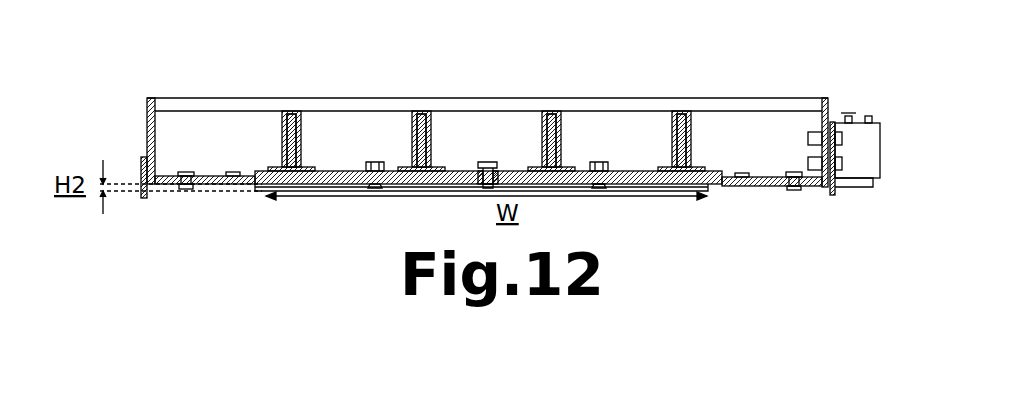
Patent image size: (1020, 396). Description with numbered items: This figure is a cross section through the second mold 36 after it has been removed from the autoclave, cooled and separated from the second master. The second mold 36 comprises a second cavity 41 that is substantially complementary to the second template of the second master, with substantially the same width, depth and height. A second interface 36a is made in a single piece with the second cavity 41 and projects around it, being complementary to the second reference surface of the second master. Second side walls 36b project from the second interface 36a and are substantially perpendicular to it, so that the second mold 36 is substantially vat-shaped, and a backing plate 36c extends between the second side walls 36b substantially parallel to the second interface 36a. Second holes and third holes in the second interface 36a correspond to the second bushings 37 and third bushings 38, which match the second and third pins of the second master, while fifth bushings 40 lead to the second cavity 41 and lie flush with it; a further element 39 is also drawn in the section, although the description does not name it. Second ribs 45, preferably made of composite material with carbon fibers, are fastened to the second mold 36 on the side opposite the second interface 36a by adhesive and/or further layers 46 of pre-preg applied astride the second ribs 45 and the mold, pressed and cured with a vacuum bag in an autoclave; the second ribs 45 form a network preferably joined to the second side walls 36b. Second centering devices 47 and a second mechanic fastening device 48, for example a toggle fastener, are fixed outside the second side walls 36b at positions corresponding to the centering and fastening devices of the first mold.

The second mold 36 is at (420, 178).
The second interface 36a is at (243, 185).
The second side walls 36b is at (147, 110).
The backing plate 36c is at (768, 98).
The second bushings 37 is at (184, 188).
The third bushings 38 is at (232, 178).
The positioning pin 39 is at (488, 186).
The fifth bushings 40 is at (375, 184).
The second cavity 41 is at (603, 188).
The second ribs 45 is at (297, 117).
The further layers of pre-preg 46 is at (288, 118).
The second centering devices 47 is at (877, 140).
The second mechanic fastening device 48 is at (140, 166).